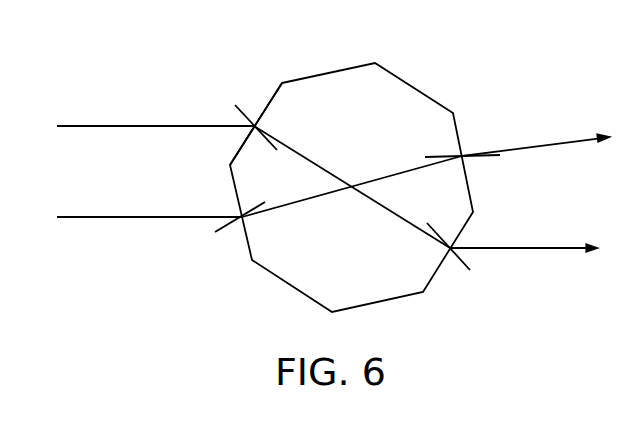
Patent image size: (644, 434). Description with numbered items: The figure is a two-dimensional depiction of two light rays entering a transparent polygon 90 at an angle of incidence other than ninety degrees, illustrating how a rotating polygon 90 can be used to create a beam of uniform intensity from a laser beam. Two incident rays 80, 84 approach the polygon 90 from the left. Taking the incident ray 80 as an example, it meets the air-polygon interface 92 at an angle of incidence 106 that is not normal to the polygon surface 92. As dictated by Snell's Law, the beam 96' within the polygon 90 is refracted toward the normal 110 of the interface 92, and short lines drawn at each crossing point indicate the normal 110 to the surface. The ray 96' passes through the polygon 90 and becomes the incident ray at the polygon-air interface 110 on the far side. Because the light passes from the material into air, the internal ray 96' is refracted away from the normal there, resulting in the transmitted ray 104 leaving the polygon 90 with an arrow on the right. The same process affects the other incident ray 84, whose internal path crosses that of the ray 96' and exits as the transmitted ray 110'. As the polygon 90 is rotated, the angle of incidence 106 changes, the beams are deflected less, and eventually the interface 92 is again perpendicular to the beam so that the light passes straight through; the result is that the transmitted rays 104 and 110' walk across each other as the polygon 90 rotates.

The incident ray 80 is at (141, 127).
The incident ray 84 is at (135, 219).
The polygon 90 is at (357, 270).
The air-polygon interface 92 is at (266, 110).
The refracted beam within the polygon 96' is at (352, 183).
The transmitted ray 104 is at (566, 247).
The angle of incidence 106 is at (232, 114).
The normal of the interface 110 is at (375, 167).
The transmitted ray 110' is at (536, 125).